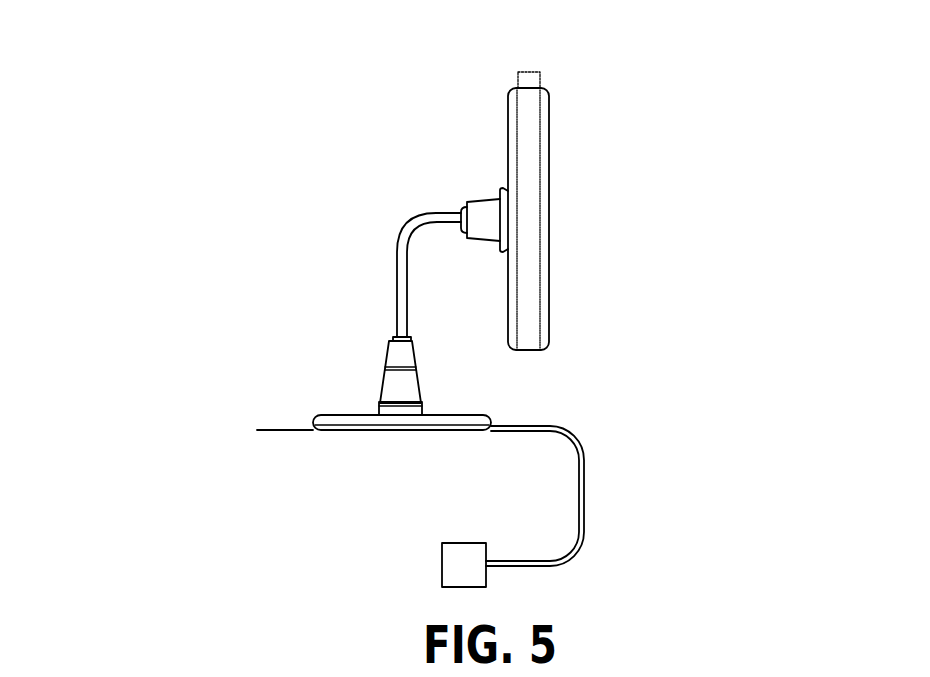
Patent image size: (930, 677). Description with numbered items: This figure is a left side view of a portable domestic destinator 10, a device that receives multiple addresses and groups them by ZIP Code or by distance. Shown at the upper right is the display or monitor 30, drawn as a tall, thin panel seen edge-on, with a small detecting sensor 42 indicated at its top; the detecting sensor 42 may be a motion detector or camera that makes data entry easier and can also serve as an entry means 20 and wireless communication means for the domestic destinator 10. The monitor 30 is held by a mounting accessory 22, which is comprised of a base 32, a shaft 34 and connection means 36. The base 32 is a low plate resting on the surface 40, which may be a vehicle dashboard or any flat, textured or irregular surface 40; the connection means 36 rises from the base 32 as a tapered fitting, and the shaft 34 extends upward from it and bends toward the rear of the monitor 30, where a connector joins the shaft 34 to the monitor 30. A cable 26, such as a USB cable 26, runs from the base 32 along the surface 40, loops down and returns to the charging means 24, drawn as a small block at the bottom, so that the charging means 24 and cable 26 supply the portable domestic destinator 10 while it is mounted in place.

The domestic destinator 10 is at (124, 166).
The entry means 20 is at (549, 265).
The mounting accessory 22 is at (278, 336).
The charging means 24 is at (455, 562).
The cable 26 is at (585, 500).
The monitor 30 is at (527, 143).
The base 32 is at (450, 420).
The shaft 34 is at (398, 251).
The connection means 36 is at (425, 428).
The surface 40 is at (272, 430).
The detecting sensor 42 is at (528, 82).